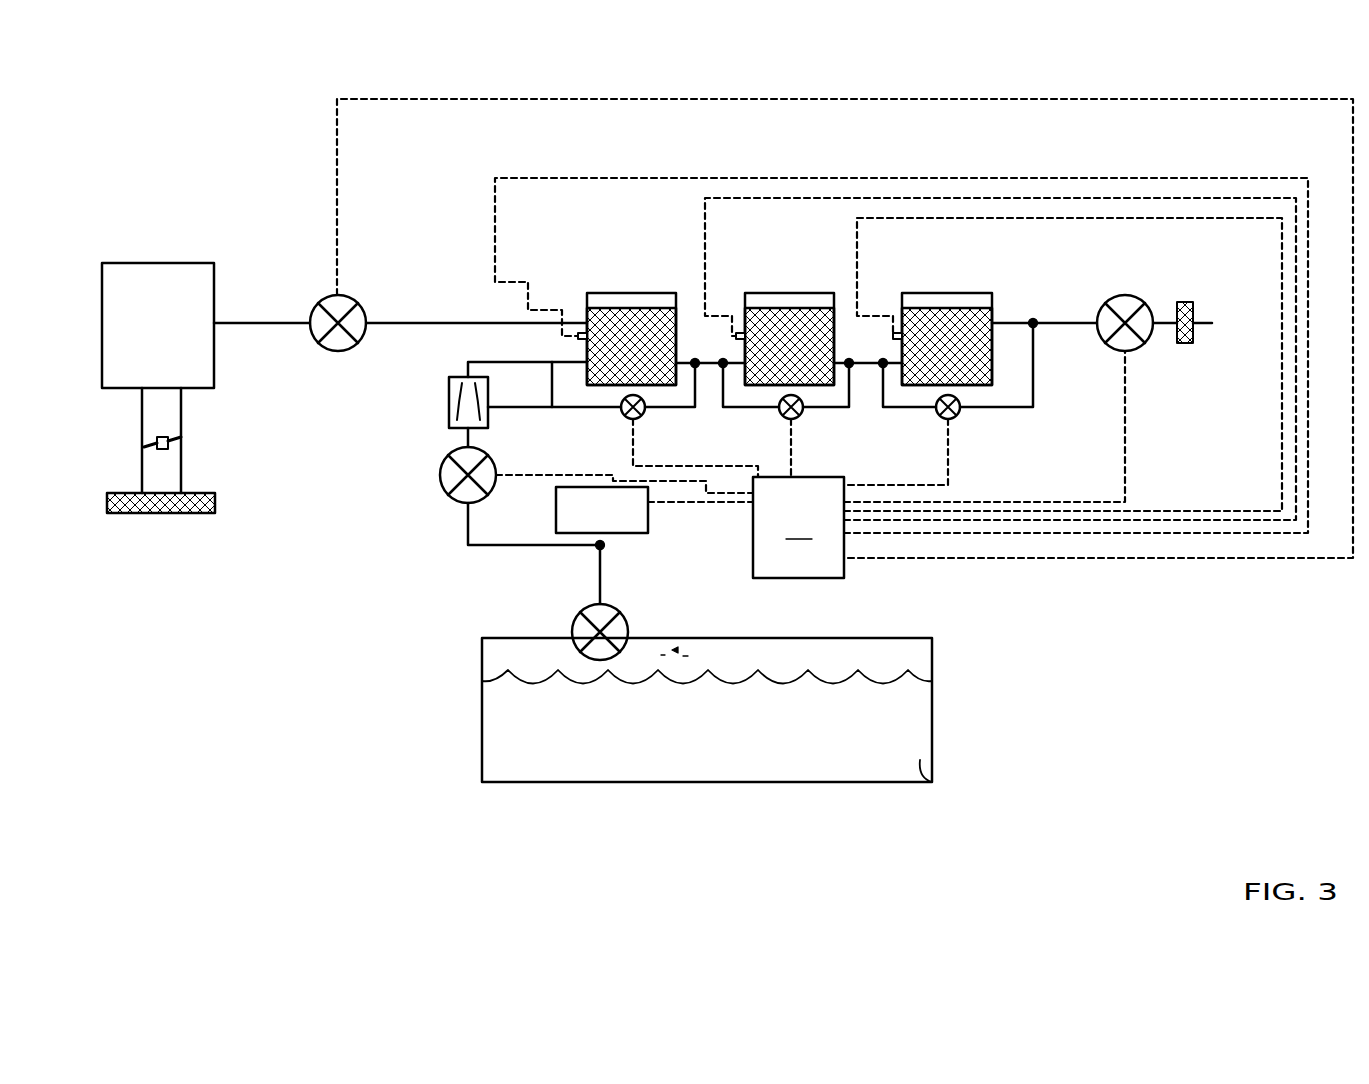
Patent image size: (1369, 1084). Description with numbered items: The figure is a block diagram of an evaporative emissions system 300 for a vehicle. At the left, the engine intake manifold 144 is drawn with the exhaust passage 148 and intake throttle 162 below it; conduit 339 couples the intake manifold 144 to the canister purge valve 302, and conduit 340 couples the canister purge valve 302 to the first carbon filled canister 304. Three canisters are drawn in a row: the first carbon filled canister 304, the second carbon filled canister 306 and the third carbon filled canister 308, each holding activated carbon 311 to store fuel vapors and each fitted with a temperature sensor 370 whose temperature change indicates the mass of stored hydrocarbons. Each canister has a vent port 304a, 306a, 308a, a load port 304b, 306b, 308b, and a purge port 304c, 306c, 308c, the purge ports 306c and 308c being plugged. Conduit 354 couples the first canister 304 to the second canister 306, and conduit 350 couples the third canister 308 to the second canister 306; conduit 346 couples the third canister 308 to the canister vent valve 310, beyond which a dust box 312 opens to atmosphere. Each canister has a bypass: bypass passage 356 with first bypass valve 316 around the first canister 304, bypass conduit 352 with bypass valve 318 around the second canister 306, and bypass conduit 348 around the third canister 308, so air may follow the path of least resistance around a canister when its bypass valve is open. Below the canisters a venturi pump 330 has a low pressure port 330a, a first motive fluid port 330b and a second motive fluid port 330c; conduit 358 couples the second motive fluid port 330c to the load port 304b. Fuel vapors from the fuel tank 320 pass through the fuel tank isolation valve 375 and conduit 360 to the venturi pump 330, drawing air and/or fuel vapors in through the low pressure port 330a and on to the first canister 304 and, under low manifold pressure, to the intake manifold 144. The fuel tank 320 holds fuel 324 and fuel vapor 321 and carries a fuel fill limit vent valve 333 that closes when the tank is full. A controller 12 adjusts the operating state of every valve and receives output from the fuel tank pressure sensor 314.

The evaporative emissions system 300 is at (185, 150).
The intake manifold 144 is at (179, 341).
The exhaust passage 148 is at (113, 510).
The intake throttle 162 is at (168, 446).
The conduit 339 is at (230, 322).
The canister purge valve 302 is at (344, 296).
The conduit 340 is at (364, 315).
The first carbon filled canister 304 is at (598, 290).
The vent port 304a is at (678, 350).
The load port 304b is at (589, 366).
The purge port 304c is at (584, 315).
The second carbon filled canister 306 is at (756, 290).
The vent port 306a is at (836, 350).
The load port 306b is at (746, 376).
The purge port 306c is at (742, 315).
The third carbon filled canister 308 is at (916, 290).
The vent port 308a is at (997, 315).
The load port 308b is at (889, 376).
The purge port 308c is at (900, 315).
The activated carbon 311 is at (651, 356).
The temperature sensors 370 is at (578, 340).
The venturi pump 330 is at (449, 390).
The low pressure port 330a is at (489, 406).
The first motive fluid port 330b is at (466, 433).
The second motive fluid port 330c is at (465, 375).
The conduit 358 is at (552, 392).
The first bypass valve 316 is at (628, 415).
The first bypass passage 356 is at (645, 410).
The conduit 354 is at (708, 370).
The bypass valve 318 is at (786, 417).
The bypass conduit 352 is at (803, 412).
The conduit 350 is at (862, 370).
The fuel tank 320 is at (956, 415).
The bypass conduit 348 is at (980, 415).
The conduit 346 is at (1062, 320).
The canister vent valve 310 is at (1125, 295).
The dust box 312 is at (1193, 302).
The fuel tank isolation valve 375 is at (452, 500).
The conduit 360 is at (466, 546).
The fuel tank pressure sensor 314 is at (570, 520).
The fuel fill limit vent valve 333 is at (572, 637).
The fuel vapor 321 is at (688, 651).
The fuel 324 is at (932, 778).
The controller 12 is at (798, 527).